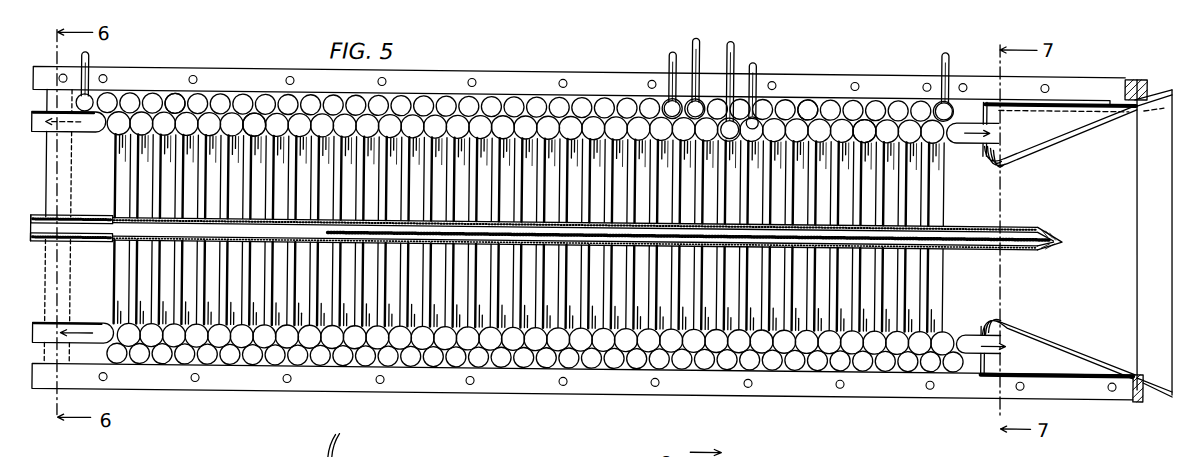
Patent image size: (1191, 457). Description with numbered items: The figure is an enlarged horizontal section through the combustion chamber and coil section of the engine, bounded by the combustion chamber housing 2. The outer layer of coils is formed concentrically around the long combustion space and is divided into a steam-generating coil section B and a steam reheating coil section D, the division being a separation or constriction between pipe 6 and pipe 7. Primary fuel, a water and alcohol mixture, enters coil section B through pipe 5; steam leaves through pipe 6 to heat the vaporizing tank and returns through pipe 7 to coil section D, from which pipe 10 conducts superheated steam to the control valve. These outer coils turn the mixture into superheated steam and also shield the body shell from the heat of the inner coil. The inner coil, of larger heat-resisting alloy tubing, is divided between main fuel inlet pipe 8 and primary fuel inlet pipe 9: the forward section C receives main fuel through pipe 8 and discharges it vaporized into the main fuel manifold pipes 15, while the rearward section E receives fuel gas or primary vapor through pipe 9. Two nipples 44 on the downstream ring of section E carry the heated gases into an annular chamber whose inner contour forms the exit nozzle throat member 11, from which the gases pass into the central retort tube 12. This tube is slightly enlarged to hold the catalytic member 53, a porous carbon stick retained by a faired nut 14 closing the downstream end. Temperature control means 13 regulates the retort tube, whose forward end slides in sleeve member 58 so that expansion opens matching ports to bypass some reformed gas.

The combustion chamber housing 2 is at (1124, 88).
The pipe 5 is at (91, 54).
The pipe 6 is at (673, 55).
The pipe 7 is at (693, 35).
The main fuel inlet pipe 8 is at (738, 45).
The primary fuel inlet pipe 9 is at (758, 59).
The pipe 10 is at (949, 58).
The exit nozzle throat member 11 is at (1064, 342).
The retort tube 12 is at (532, 216).
The temperature control means 13 is at (74, 212).
The faired nut 14 is at (1047, 217).
The main fuel manifold pipes 15 is at (101, 339).
The nipples 44 is at (966, 323).
The catalytic member 53 is at (802, 215).
The sleeve member 58 is at (80, 241).
The steam-generating coil section B is at (176, 98).
The forward section of inner coil C is at (257, 114).
The steam reheating coil section D is at (810, 100).
The rearward section of inner coil E is at (866, 117).